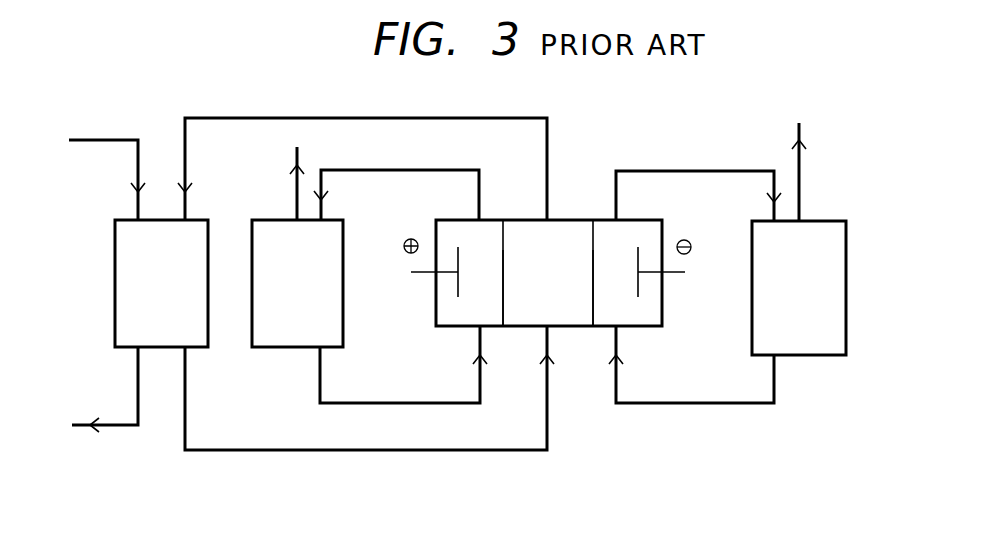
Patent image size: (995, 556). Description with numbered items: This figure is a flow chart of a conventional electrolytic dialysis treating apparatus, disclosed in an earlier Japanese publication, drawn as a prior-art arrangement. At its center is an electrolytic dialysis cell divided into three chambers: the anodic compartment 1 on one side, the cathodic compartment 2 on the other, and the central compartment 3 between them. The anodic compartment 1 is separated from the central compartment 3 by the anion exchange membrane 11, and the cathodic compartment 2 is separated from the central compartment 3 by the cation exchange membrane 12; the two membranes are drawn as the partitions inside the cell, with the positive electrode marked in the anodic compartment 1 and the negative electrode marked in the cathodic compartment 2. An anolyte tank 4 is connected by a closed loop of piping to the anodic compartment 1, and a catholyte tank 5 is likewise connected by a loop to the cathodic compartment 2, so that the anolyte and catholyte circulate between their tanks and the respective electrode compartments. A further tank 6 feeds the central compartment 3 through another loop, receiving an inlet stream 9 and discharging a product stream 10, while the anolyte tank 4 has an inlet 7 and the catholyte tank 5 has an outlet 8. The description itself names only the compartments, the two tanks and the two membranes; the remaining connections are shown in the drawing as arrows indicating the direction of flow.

The anodic compartment 1 is at (486, 285).
The cathodic compartment 2 is at (604, 285).
The central compartment 3 is at (538, 285).
The anolyte tank 4 is at (284, 297).
The catholyte tank 5 is at (789, 304).
The feed reservoir 6 is at (152, 297).
The inlet to anolyte reservoir 7 is at (295, 195).
The outlet from catholyte reservoir 8 is at (800, 178).
The feed inlet 9 is at (108, 139).
The product outlet 10 is at (108, 428).
The anion exchange membrane 11 is at (505, 312).
The cation exchange membrane 12 is at (592, 312).